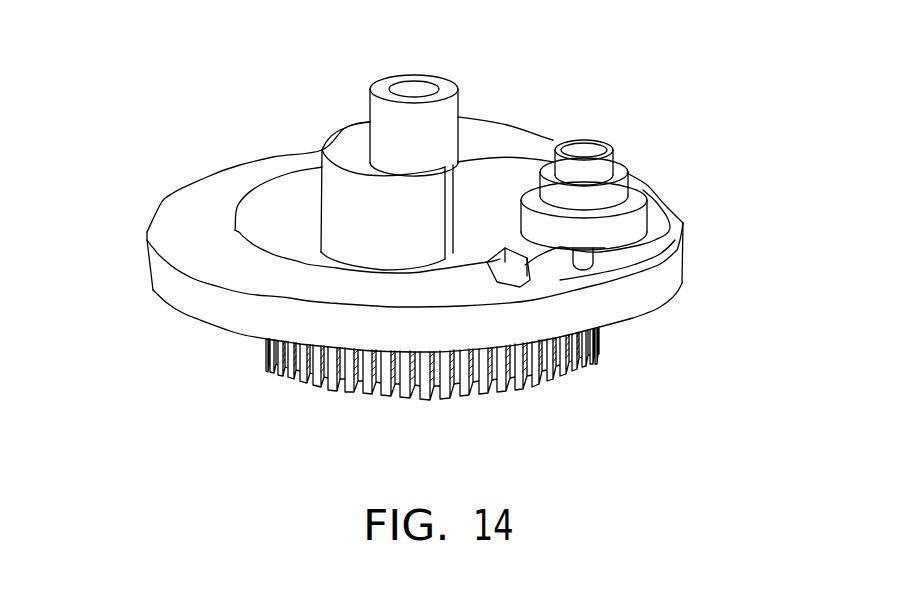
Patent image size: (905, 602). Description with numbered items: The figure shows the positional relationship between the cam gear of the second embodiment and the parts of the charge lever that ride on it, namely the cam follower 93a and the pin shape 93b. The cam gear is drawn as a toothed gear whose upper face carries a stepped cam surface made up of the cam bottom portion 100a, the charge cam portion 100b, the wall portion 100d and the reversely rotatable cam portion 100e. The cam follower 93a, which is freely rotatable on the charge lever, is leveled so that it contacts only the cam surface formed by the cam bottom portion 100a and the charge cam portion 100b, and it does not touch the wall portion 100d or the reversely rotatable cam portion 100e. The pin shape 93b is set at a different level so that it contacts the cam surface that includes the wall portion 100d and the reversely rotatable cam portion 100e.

The cam follower 93a is at (567, 227).
The pin shape 93b is at (594, 258).
The cam bottom portion 100a is at (477, 200).
The charge cam portion 100b is at (353, 223).
The wall portion 100d is at (322, 190).
The reversely rotatable cam portion 100e is at (520, 282).